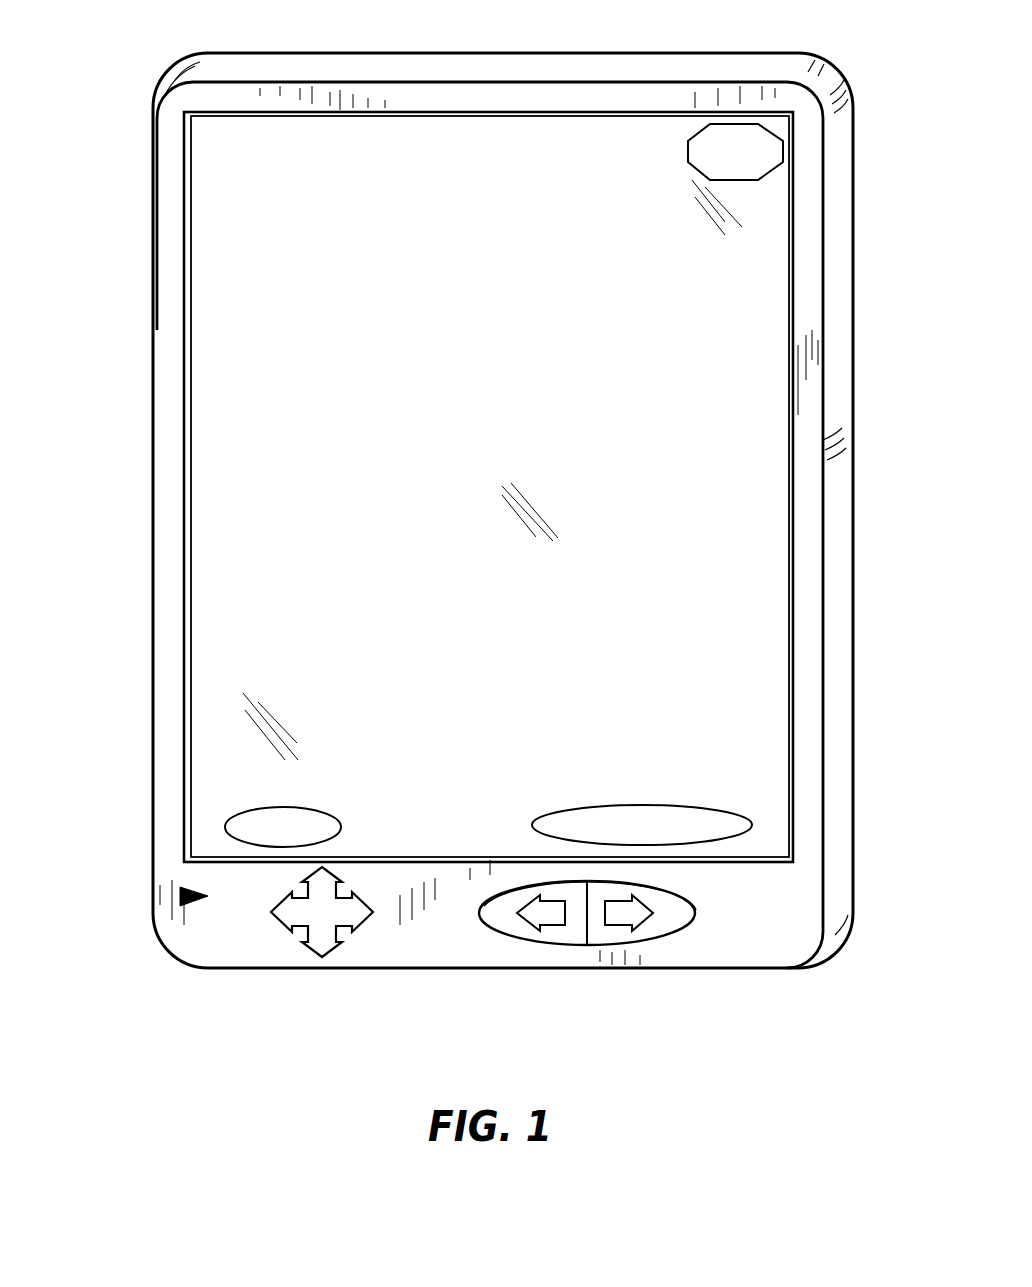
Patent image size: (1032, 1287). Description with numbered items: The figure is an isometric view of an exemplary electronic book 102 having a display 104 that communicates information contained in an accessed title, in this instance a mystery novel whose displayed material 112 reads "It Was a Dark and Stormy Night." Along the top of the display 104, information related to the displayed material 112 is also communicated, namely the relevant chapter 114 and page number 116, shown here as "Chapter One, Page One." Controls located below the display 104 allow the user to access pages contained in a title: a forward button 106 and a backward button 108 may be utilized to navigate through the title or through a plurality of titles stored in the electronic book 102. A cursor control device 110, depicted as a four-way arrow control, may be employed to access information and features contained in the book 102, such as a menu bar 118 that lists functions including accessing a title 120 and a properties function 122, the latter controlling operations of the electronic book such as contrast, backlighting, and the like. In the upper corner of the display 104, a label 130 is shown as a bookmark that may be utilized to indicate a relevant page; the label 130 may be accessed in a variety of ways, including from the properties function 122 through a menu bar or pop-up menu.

The electronic book 102 is at (154, 222).
The display 104 is at (193, 300).
The forward button 106 is at (668, 940).
The backward button 108 is at (558, 945).
The cursor control device 110 is at (322, 957).
The displayed material 112 is at (247, 417).
The chapter 114 is at (258, 122).
The page number 116 is at (420, 122).
The menu bar 118 is at (180, 896).
The title 120 is at (225, 827).
The properties function 122 is at (752, 826).
The label 130 is at (712, 126).